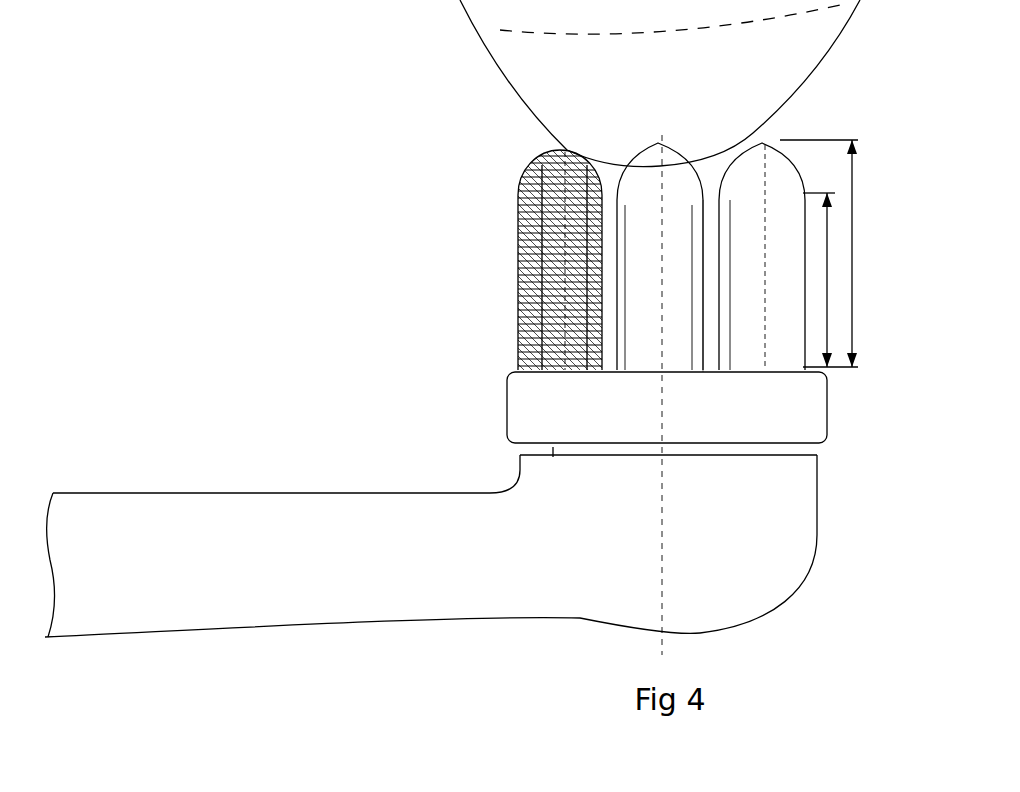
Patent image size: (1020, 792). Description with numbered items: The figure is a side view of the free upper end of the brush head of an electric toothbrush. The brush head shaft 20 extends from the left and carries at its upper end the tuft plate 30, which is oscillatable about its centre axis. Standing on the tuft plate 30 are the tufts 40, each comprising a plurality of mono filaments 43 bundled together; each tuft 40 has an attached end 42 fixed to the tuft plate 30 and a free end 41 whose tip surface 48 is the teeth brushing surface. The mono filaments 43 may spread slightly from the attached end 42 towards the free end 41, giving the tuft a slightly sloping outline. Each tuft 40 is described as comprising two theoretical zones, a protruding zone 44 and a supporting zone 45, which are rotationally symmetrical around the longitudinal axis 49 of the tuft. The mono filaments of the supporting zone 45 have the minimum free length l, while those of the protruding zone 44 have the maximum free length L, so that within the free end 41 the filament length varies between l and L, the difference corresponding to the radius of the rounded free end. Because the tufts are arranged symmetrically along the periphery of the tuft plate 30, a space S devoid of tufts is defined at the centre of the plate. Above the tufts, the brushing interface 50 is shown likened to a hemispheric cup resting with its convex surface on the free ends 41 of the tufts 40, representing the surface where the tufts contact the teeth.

The brush head shaft 20 is at (330, 478).
The tuft plate 30 is at (525, 410).
The tuft 40 is at (626, 329).
The free end of tuft 41 is at (561, 226).
The attached end of tuft 42 is at (515, 362).
The mono filament 43 is at (650, 345).
The protruding zone 44 is at (561, 259).
The supporting zone 45 is at (561, 259).
The tip surface 48 is at (793, 223).
The longitudinal axis of tuft 49 is at (764, 190).
The brushing interface 50 is at (541, 65).
The space devoid of tufts S is at (711, 352).
The maximum free length L is at (845, 253).
The minimum free length l is at (819, 280).